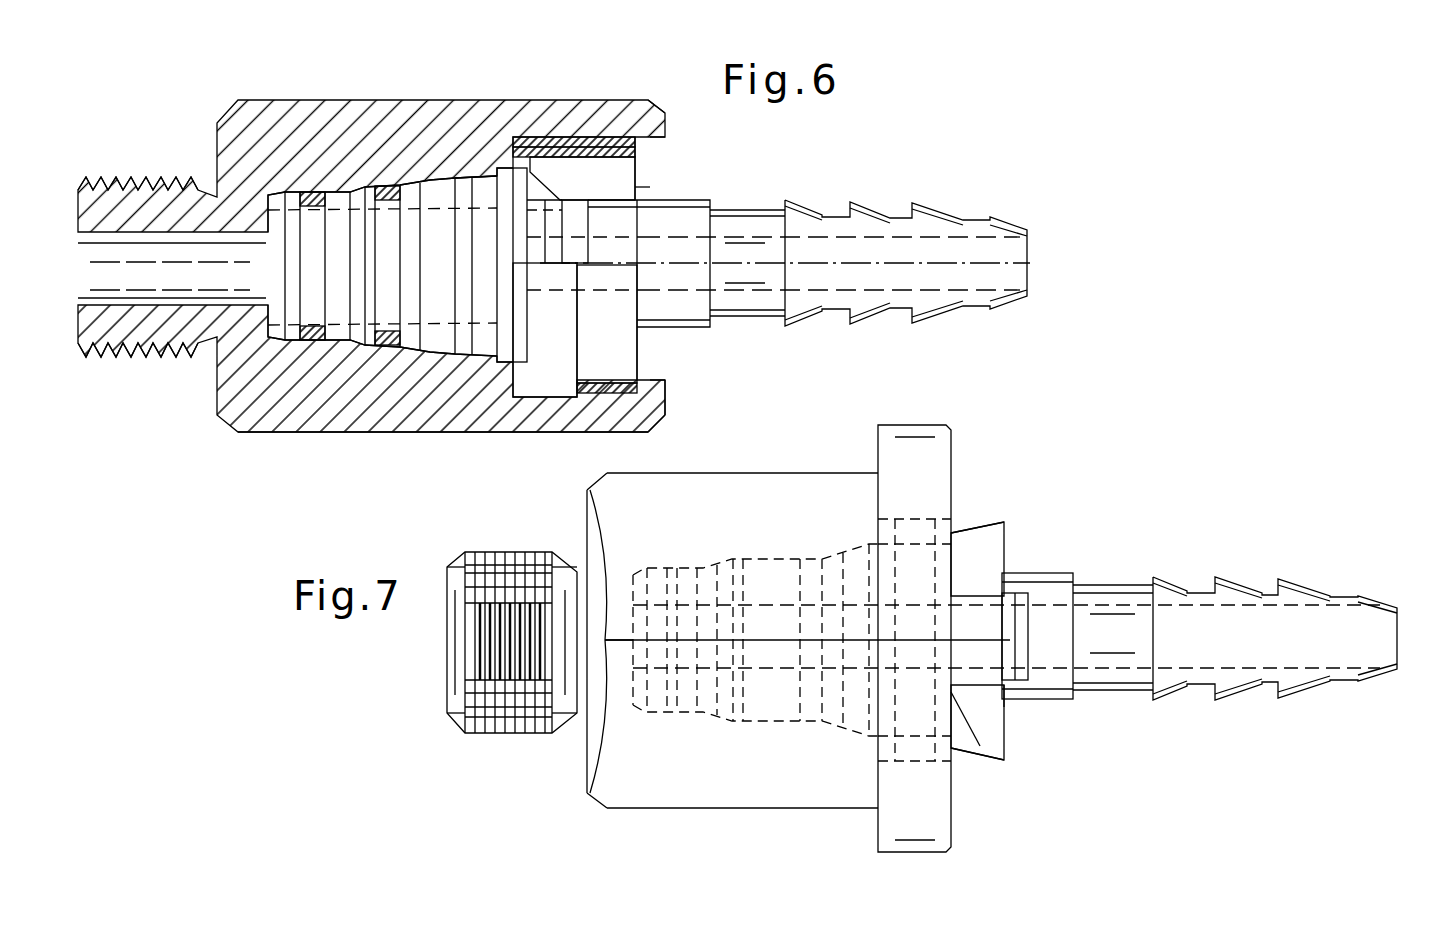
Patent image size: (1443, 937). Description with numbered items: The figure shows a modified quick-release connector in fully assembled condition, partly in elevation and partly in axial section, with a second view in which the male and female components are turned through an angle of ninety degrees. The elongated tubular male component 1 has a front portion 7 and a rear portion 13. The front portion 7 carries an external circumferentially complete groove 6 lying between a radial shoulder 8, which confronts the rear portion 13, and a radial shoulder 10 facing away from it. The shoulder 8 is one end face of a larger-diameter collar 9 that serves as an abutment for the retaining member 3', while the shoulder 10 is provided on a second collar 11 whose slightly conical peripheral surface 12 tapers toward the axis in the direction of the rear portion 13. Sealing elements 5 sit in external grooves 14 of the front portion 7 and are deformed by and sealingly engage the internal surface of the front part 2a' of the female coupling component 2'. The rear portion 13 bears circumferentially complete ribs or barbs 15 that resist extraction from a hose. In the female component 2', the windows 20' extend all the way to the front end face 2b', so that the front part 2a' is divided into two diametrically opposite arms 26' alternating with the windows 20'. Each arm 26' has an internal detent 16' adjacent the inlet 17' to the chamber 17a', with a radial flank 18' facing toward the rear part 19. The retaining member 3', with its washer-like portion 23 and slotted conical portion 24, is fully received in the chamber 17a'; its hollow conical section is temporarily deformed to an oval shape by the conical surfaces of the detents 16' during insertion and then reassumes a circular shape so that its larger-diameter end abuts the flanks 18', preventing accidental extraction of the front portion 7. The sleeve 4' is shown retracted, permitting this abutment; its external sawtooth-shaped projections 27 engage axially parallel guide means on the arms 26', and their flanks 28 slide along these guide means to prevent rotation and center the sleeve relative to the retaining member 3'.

In FIG. 6, the male component 1 is at (785, 227).
In FIG. 7, the male component 1 is at (1199, 574).
In FIG. 6, the female coupling component 2' is at (371, 266).
In FIG. 7, the female coupling component 2' is at (699, 640).
In FIG. 6, the front part 2a' is at (443, 464).
In FIG. 6, the front end face 2b' is at (713, 401).
In FIG. 6, the retaining member 3' is at (610, 107).
In FIG. 7, the retaining member 3' is at (977, 619).
In FIG. 6, the sleeve 4' is at (574, 96).
In FIG. 7, the sleeve 4' is at (914, 609).
In FIG. 6, the sealing elements 5 is at (320, 195).
In FIG. 6, the external groove 6 is at (527, 210).
In FIG. 6, the front portion 7 is at (423, 190).
In FIG. 6, the radial shoulder 8 is at (545, 247).
In FIG. 6, the larger-diameter collar 9 is at (500, 170).
In FIG. 6, the radial shoulder 10 is at (565, 247).
In FIG. 6, the second collar 11 is at (565, 258).
In FIG. 6, the conical peripheral surface 12 is at (649, 263).
In FIG. 6, the rear portion 13 is at (740, 210).
In FIG. 7, the rear portion 13 is at (1108, 585).
In FIG. 6, the external grooves 14 is at (313, 195).
In FIG. 6, the ribs or barbs 15 is at (805, 212).
In FIG. 7, the ribs or barbs 15 is at (1162, 582).
In FIG. 6, the internal detent 16' is at (672, 266).
In FIG. 6, the inlet 17' is at (692, 256).
In FIG. 6, the chamber 17a' is at (712, 155).
In FIG. 6, the radial flank 18' is at (675, 253).
In FIG. 6, the rear part 19 is at (137, 355).
In FIG. 7, the rear part 19 is at (492, 733).
In FIG. 6, the windows 20' is at (584, 264).
In FIG. 6, the washer-like portion 23 is at (518, 150).
In FIG. 6, the slotted conical portion 24 is at (548, 193).
In FIG. 6, the arms 26' is at (583, 247).
In FIG. 7, the arms 26' is at (1029, 714).
In FIG. 6, the projections 27 is at (513, 405).
In FIG. 7, the projections 27 is at (919, 584).
In FIG. 7, the flanks 28 is at (888, 598).